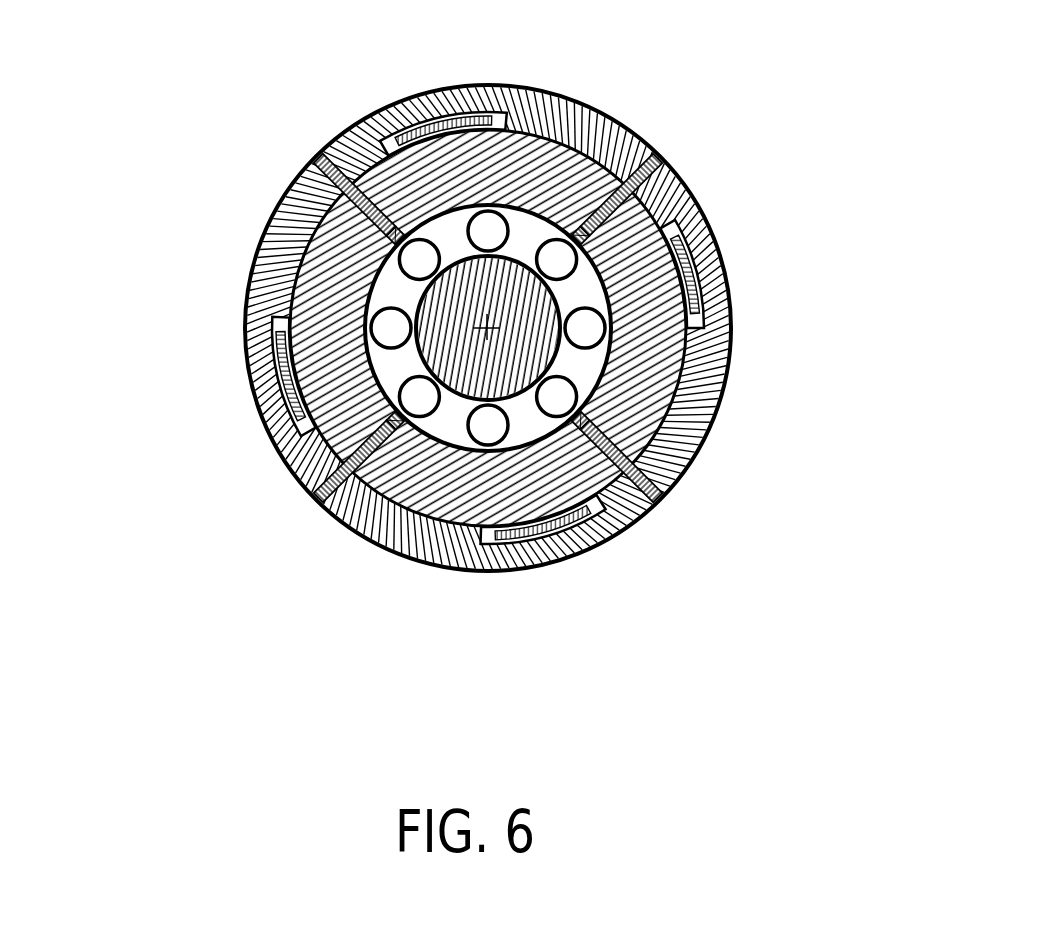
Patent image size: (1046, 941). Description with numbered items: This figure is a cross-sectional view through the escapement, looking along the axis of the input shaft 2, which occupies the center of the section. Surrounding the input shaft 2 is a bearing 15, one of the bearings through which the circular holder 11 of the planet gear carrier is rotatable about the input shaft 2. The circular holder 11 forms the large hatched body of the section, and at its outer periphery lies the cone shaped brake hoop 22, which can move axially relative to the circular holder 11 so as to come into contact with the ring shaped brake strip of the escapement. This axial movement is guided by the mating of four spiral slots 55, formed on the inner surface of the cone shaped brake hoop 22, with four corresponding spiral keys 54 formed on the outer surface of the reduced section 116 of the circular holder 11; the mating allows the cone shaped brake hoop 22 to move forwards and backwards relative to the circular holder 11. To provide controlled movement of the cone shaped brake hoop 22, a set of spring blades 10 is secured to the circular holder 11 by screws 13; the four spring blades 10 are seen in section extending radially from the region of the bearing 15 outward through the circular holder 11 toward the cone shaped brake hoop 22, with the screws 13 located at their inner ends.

The input shaft 2 is at (655, 345).
The spring blades 10 is at (325, 170).
The circular holder 11 is at (388, 328).
The screws 13 is at (711, 475).
The bearing 15 is at (350, 328).
The cone shaped brake hoop 22 is at (419, 324).
The spiral keys 54 is at (509, 590).
The spiral slots 55 is at (573, 583).
The reduced section 116 is at (440, 135).